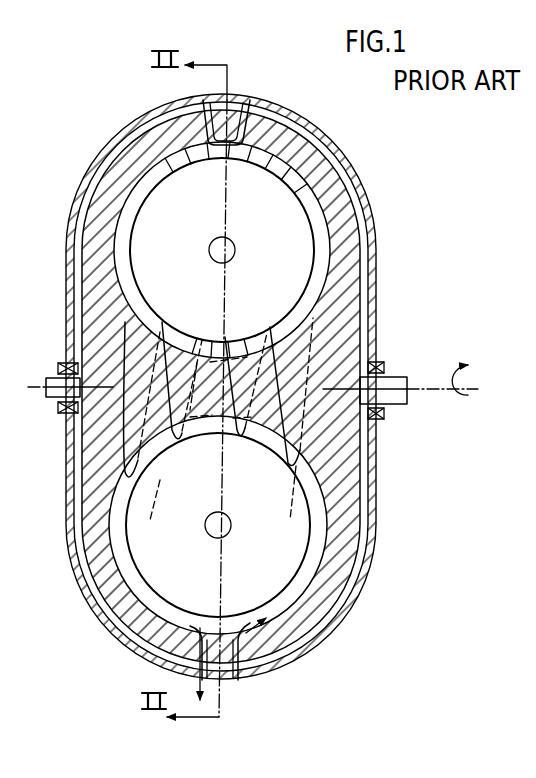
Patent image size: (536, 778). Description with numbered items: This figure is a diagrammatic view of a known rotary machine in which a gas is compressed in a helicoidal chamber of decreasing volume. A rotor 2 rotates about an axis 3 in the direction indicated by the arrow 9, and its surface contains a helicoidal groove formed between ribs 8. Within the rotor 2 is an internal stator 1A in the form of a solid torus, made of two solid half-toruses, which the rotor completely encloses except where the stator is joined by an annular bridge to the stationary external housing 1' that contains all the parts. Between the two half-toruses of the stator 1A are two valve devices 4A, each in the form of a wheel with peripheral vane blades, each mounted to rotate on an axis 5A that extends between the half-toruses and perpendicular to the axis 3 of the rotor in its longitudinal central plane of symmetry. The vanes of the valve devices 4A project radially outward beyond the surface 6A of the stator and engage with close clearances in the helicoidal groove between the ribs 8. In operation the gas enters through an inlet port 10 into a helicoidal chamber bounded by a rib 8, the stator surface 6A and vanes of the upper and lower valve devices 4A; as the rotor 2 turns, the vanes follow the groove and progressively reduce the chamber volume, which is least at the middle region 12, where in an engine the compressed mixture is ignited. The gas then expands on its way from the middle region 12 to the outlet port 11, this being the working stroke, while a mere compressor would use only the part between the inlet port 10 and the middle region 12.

The internal stator 1A is at (297, 261).
The external housing 1' is at (252, 386).
The rotor 2 is at (366, 440).
The axis 3 is at (425, 390).
The valve devices 4A is at (188, 166).
The axis 5A is at (210, 254).
The surface of the stator 6A is at (129, 250).
The ribs 8 is at (241, 338).
The arrow 9 is at (468, 396).
The inlet port 10 is at (240, 682).
The outlet port 11 is at (201, 616).
The middle region 12 is at (223, 460).